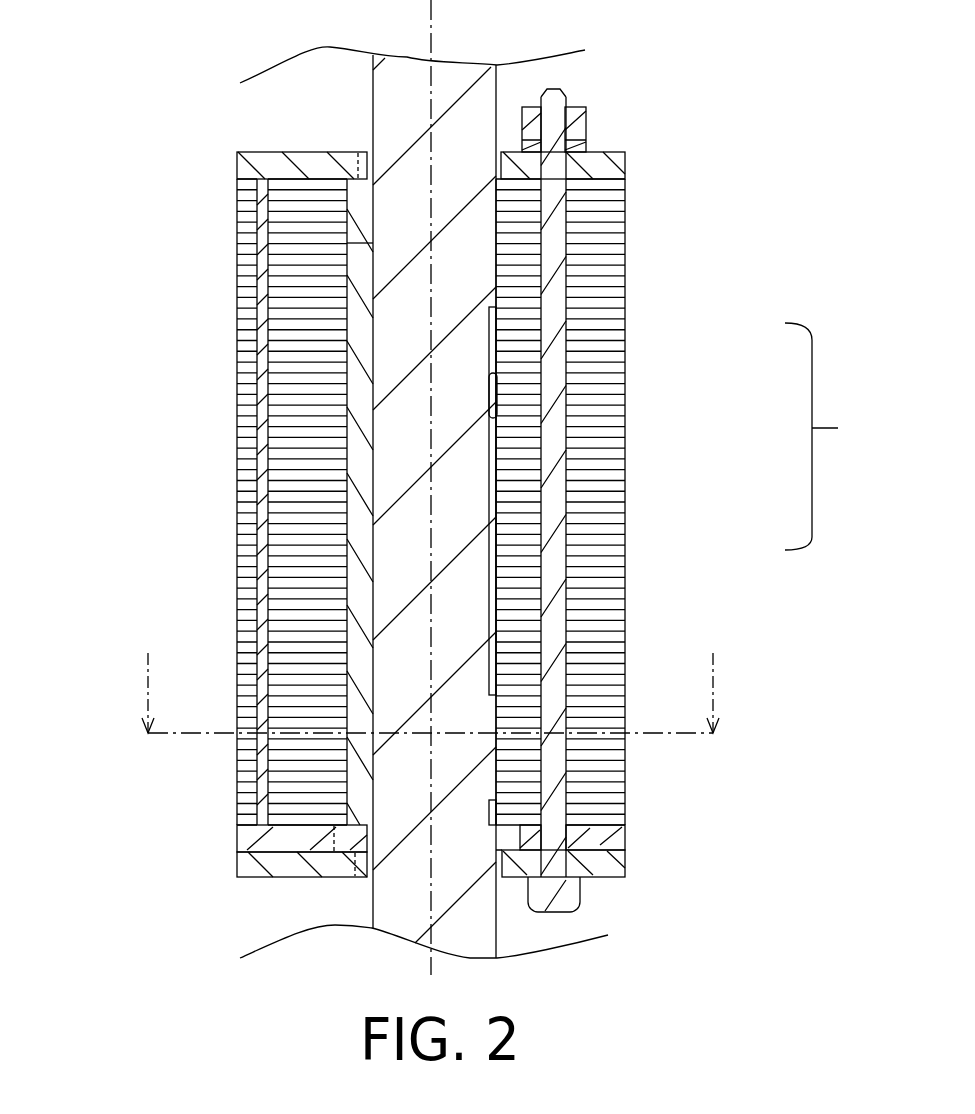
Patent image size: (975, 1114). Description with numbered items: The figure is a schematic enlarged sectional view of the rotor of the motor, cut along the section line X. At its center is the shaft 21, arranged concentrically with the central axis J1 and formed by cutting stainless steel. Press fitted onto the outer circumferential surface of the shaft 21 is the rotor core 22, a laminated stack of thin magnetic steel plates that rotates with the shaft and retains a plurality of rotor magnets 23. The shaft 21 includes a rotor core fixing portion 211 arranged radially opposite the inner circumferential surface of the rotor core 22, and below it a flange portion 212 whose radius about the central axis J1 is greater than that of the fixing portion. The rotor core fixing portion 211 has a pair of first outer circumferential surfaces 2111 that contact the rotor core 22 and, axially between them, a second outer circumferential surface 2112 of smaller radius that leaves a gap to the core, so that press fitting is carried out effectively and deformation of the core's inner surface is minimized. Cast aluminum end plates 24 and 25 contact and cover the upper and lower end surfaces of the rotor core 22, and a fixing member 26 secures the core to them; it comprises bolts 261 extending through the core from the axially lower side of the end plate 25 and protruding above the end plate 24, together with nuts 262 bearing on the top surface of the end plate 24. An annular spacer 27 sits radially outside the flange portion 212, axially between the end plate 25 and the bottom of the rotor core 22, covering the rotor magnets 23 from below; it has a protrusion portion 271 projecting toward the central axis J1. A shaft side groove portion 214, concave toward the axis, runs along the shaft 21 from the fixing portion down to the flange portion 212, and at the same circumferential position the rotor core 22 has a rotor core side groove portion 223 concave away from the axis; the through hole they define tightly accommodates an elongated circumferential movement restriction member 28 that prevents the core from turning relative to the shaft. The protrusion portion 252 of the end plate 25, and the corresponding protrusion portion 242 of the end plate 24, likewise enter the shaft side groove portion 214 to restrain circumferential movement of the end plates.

The shaft 21 is at (346, 106).
The central axis J1 is at (432, 37).
The rotor core 22 is at (641, 283).
The rotor magnet 23 is at (265, 433).
The end plate 24 is at (224, 170).
The protrusion portion 242 is at (365, 152).
The rotor core side groove portion 223 is at (330, 207).
The circumferential movement restriction member 28 is at (362, 270).
The shaft side groove portion 214 is at (375, 366).
The end plate 25 is at (224, 875).
The protrusion portion 252 is at (362, 878).
The spacer 27 is at (273, 838).
The protrusion portion 271 is at (353, 833).
The rotor core fixing portion 211 is at (677, 502).
The first outer circumferential surface 2111 is at (500, 253).
The second outer circumferential surface 2112 is at (497, 418).
The flange portion 212 is at (507, 835).
The fixing member 26 is at (600, 914).
The bolt 261 is at (563, 887).
The nut 262 is at (580, 124).
The section line X- X is at (431, 672).